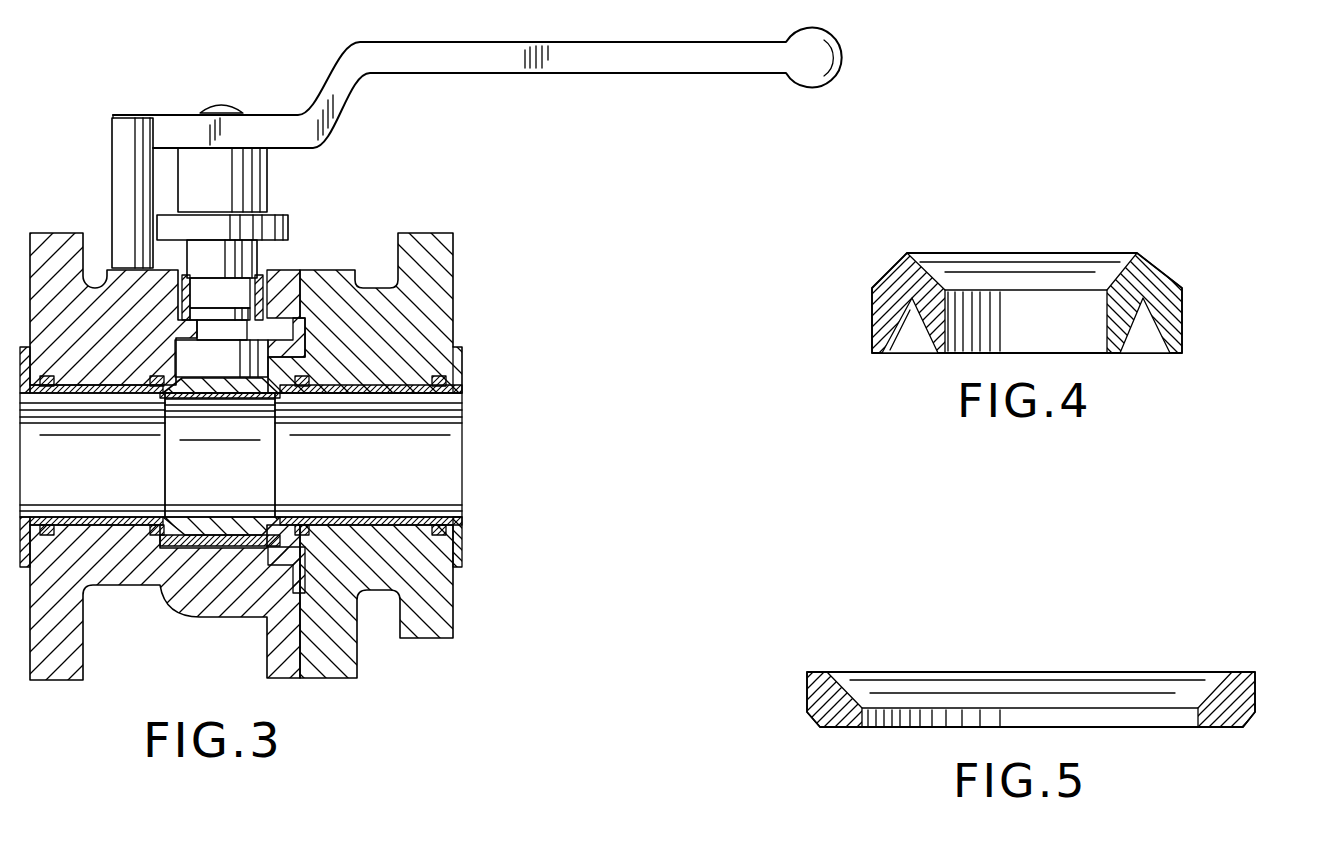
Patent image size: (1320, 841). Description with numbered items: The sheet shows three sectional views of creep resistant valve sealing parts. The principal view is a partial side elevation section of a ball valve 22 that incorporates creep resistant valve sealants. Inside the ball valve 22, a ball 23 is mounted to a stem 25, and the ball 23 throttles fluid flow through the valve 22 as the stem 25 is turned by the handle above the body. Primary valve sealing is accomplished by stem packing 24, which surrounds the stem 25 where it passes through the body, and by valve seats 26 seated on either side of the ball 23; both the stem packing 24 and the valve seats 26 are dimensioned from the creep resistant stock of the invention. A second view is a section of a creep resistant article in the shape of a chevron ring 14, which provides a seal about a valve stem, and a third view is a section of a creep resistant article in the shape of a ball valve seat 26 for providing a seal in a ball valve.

In FIG. 4, the chevron ring 14 is at (1178, 305).
In FIG. 3, the ball valve 22 is at (431, 362).
In FIG. 3, the ball 23 is at (192, 543).
In FIG. 3, the stem packing 24 is at (242, 256).
In FIG. 3, the stem 25 is at (263, 258).
In FIG. 3, the valve seats 26 is at (163, 545).
In FIG. 5, the valve seats 26 is at (1257, 680).